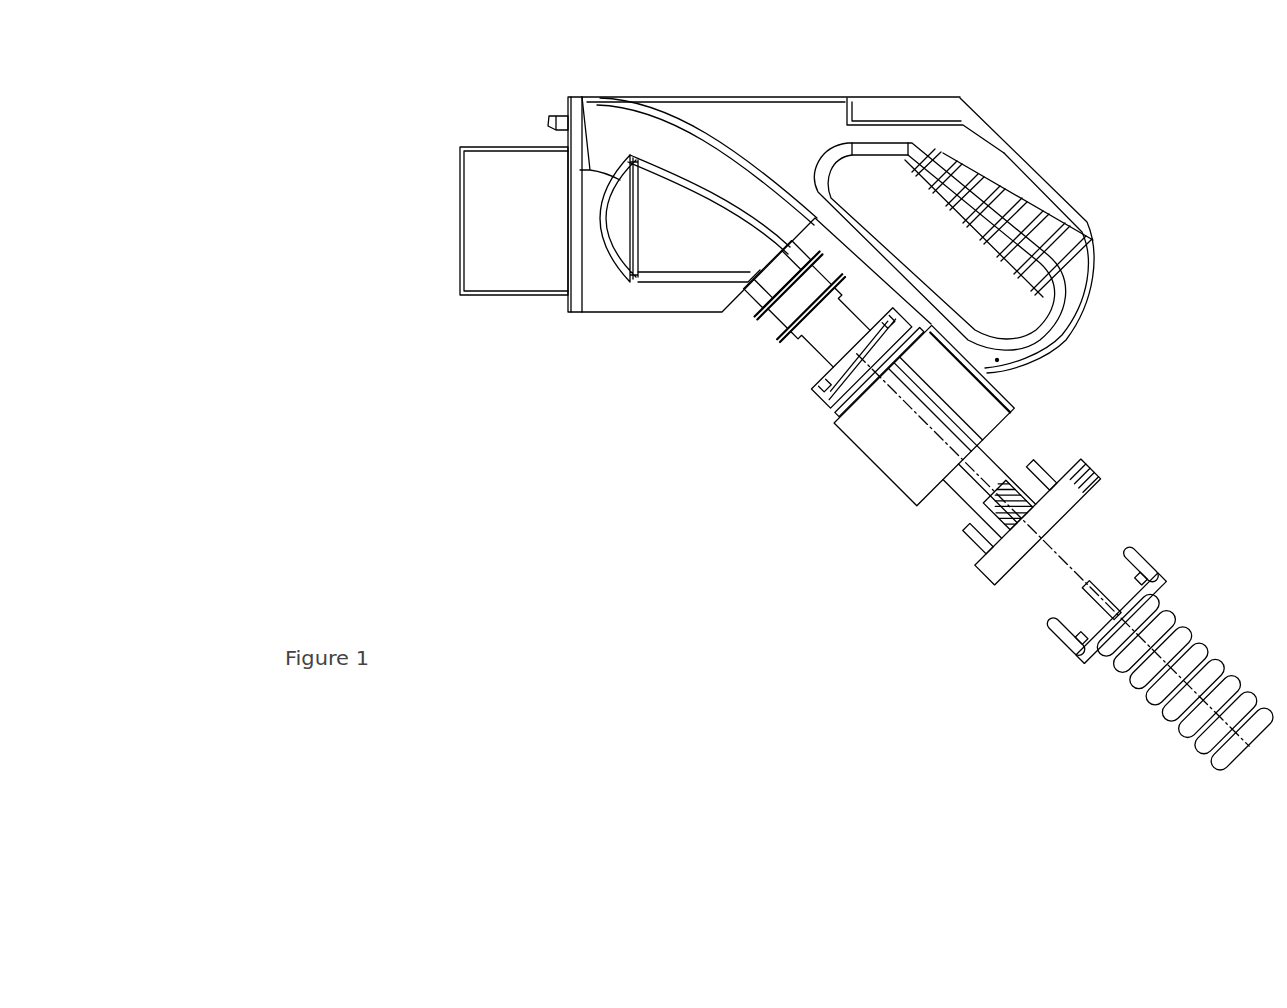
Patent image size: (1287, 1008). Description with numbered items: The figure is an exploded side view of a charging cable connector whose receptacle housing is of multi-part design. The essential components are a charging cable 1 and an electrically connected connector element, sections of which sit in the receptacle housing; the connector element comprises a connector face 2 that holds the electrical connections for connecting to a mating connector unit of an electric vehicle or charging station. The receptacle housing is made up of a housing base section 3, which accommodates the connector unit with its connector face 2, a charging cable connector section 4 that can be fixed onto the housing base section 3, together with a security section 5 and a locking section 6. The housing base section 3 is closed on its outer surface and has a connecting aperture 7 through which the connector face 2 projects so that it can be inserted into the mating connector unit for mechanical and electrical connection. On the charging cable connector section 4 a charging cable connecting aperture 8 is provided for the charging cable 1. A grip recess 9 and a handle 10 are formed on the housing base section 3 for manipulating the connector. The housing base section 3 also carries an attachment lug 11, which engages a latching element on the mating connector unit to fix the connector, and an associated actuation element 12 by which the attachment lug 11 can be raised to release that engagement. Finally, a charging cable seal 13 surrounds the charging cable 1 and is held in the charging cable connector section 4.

The charging cable 1 is at (987, 472).
The connector face 2 is at (497, 278).
The housing base section 3 is at (632, 318).
The charging cable connector section 4 is at (875, 472).
The security section 5 is at (975, 592).
The locking section 6 is at (1203, 597).
The connecting aperture 7 is at (555, 308).
The charging cable connecting aperture 8 is at (945, 495).
The grip recess 9 is at (998, 311).
The handle 10 is at (1033, 185).
The attachment lug 11 is at (550, 110).
The actuation element 12 is at (950, 91).
The charging cable seal 13 is at (762, 335).